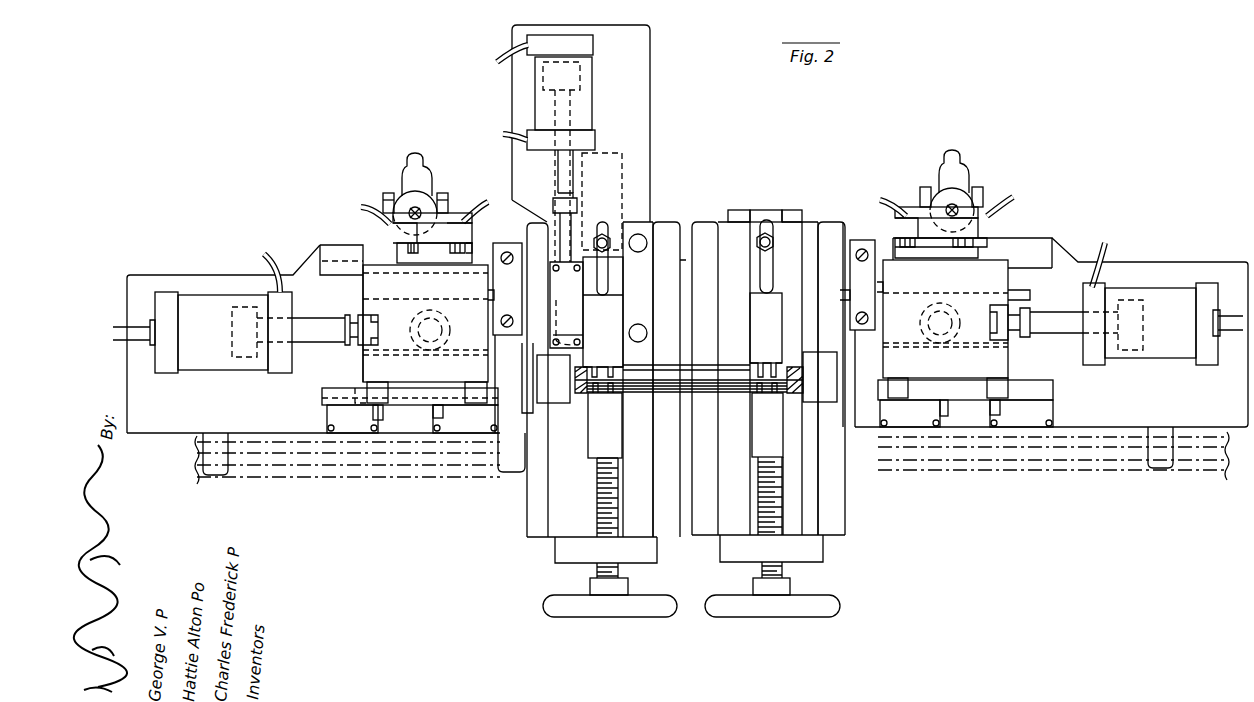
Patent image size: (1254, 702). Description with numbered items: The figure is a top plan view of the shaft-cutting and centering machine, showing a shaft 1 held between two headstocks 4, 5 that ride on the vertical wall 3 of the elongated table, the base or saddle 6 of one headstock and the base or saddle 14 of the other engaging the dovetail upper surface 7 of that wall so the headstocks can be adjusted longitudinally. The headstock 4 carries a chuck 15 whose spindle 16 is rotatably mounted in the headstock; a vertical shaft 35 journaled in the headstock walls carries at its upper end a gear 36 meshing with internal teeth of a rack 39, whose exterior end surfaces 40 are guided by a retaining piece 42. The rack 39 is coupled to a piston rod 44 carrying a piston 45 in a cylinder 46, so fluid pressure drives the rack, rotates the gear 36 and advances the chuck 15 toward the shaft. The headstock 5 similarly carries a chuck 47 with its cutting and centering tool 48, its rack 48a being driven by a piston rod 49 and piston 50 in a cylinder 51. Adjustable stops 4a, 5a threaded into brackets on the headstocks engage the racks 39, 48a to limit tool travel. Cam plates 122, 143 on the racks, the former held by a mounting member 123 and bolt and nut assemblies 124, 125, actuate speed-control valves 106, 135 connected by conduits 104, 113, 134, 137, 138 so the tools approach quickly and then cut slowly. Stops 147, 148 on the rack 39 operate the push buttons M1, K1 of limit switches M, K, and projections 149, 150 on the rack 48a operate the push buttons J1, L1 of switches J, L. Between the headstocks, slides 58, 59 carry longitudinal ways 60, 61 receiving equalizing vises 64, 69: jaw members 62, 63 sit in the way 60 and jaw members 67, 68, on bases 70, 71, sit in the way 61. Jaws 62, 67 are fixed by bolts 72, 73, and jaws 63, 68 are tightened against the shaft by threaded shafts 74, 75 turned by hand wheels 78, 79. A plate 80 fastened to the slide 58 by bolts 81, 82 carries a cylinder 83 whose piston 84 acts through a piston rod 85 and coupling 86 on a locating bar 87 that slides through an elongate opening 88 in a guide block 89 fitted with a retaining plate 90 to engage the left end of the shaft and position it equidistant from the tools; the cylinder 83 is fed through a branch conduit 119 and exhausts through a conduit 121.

The shaft 1 is at (702, 360).
The vertical wall 3 is at (997, 472).
The headstock 4 is at (316, 237).
The adjustable stop 4a is at (484, 290).
The headstock 5 is at (1061, 236).
The adjustable stop 5a is at (885, 285).
The base or saddle 6 is at (513, 463).
The upper surface 7 is at (336, 478).
The base or saddle 14 is at (112, 327).
The chuck 15 is at (560, 383).
The spindle 16 is at (525, 385).
The vertical shaft 35 is at (415, 345).
The gear 36 is at (418, 318).
The rack 39 is at (355, 290).
The exterior end surfaces 40 is at (355, 388).
The retaining or guide piece 42 is at (322, 406).
The piston rod 44 is at (307, 318).
The piston 45 is at (243, 307).
The cylinder 46 is at (195, 302).
The chuck 47 is at (828, 383).
The cutting and centering tool 48 is at (790, 362).
The rack 48a is at (1018, 286).
The piston rod 49 is at (1068, 325).
The piston 50 is at (1130, 300).
The cylinder 51 is at (1172, 298).
The slide 58 is at (674, 218).
The slide 59 is at (840, 222).
The longitudinal way 60 is at (556, 538).
The longitudinal way 61 is at (722, 537).
The jaw member 62 is at (612, 348).
The jaw member 63 is at (605, 460).
The equalizing vise 64 is at (585, 458).
The jaw member 67 is at (778, 328).
The jaw member 68 is at (767, 459).
The equalizing vise 69 is at (770, 204).
The base 70 is at (798, 210).
The base 71 is at (795, 505).
The bolt 72 is at (612, 248).
The bolt 73 is at (757, 240).
The threaded shaft 74 is at (597, 574).
The threaded shaft 75 is at (782, 570).
The hand wheel 78 is at (611, 610).
The hand wheel 79 is at (770, 610).
The plate 80 is at (643, 100).
The bolt 81 is at (647, 245).
The bolt 82 is at (647, 333).
The cylinder 83 is at (535, 84).
The piston 84 is at (578, 75).
The piston rod 85 is at (560, 159).
The coupling 86 is at (560, 200).
The locating bar 87 is at (570, 210).
The elongate opening 88 is at (556, 320).
The guide block 89 is at (548, 285).
The retaining plate 90 is at (553, 325).
The branch conduit 104 is at (487, 200).
The speed-control valve 106 is at (418, 143).
The conduit 113 is at (264, 252).
The branch conduit 119 is at (495, 56).
The conduit 121 is at (503, 130).
The cam plate 122 is at (388, 208).
The mounting member 123 is at (393, 228).
The bolt and nut assembly 124 is at (396, 253).
The bolt and nut assembly 125 is at (470, 246).
The conduit 134 is at (880, 198).
The speed-control valve 135 is at (961, 144).
The conduit 137 is at (1012, 196).
The conduit 138 is at (1228, 316).
The cam plate 143 is at (985, 216).
The stop 147 is at (378, 382).
The stop 148 is at (478, 382).
The projection or stop 149 is at (898, 378).
The projection or stop 150 is at (995, 378).
The limit switch M is at (352, 428).
The push button M1 is at (383, 415).
The limit switch K is at (472, 428).
The push button K1 is at (437, 410).
The limit switch J is at (911, 423).
The push button J1 is at (935, 400).
The limit switch L is at (1026, 423).
The push button L1 is at (990, 413).